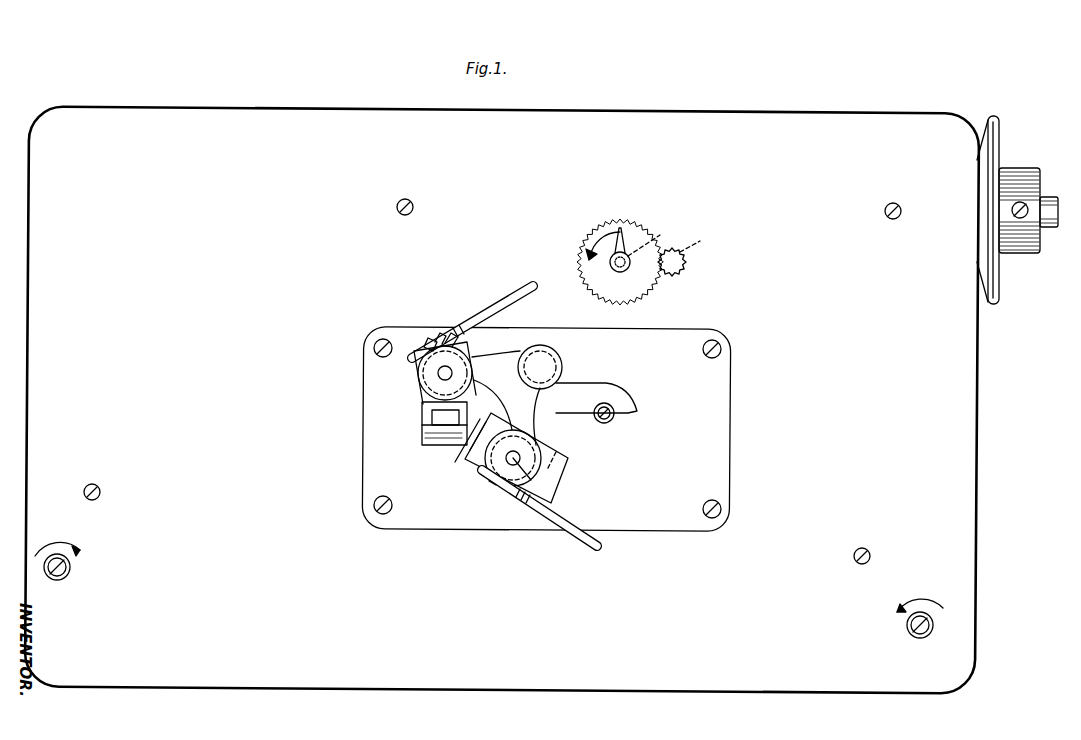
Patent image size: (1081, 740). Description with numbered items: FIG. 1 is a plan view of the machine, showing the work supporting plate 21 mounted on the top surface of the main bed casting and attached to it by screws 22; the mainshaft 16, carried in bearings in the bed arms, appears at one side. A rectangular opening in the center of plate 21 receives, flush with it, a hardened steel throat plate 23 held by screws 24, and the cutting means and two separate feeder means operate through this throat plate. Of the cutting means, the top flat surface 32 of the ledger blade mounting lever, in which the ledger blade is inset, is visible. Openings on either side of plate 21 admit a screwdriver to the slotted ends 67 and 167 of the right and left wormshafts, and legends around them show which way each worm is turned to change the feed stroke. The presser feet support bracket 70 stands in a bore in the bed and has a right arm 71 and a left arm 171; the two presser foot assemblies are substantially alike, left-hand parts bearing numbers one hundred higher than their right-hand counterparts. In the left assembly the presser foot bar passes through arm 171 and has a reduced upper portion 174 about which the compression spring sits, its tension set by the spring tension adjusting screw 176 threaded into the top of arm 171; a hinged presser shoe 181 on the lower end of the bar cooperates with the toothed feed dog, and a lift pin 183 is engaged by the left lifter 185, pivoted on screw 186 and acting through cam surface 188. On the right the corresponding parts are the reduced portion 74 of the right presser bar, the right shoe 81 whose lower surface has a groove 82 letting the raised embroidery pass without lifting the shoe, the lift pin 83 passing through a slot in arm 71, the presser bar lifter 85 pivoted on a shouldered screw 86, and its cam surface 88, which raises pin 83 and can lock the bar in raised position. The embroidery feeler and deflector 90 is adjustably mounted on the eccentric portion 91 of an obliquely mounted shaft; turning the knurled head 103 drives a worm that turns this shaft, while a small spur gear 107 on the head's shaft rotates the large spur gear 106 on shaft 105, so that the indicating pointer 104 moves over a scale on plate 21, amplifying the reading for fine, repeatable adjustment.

The mainshaft 16 is at (1041, 249).
The work supporting plate 21 is at (966, 418).
The screws 22 is at (406, 200).
The throat plate 23 is at (722, 442).
The screws 24 is at (383, 338).
The top flat surface 32 is at (432, 440).
The slotted end 67 is at (934, 626).
The presser feet support bracket 70 is at (561, 359).
The right arm 71 is at (534, 431).
The block 74 is at (552, 488).
The right shoe 81 is at (468, 464).
The groove 82 is at (558, 460).
The lift pin 83 is at (484, 476).
The presser bar lifter 85 is at (539, 516).
The shouldered screw 86 is at (493, 486).
The cam surface 88 is at (504, 492).
The embroidery senser or feeler and deflector 90 is at (626, 407).
The eccentric portion 91 is at (609, 421).
The knurled head 103 is at (686, 260).
The indicating pointer 104 is at (622, 246).
The shaft 105 is at (660, 238).
The large spur gear 106 is at (645, 294).
The small spur gear 107 is at (704, 239).
The slotted end 167 is at (71, 568).
The left arm 171 is at (500, 364).
The reduced cross-section portion 174 is at (438, 378).
The spring tension adjusting screw 176 is at (428, 369).
The hinged presser shoe 181 is at (426, 380).
The pin 183 is at (441, 334).
The lifter 185 is at (479, 310).
The block 186 is at (431, 340).
The block 188 is at (452, 335).